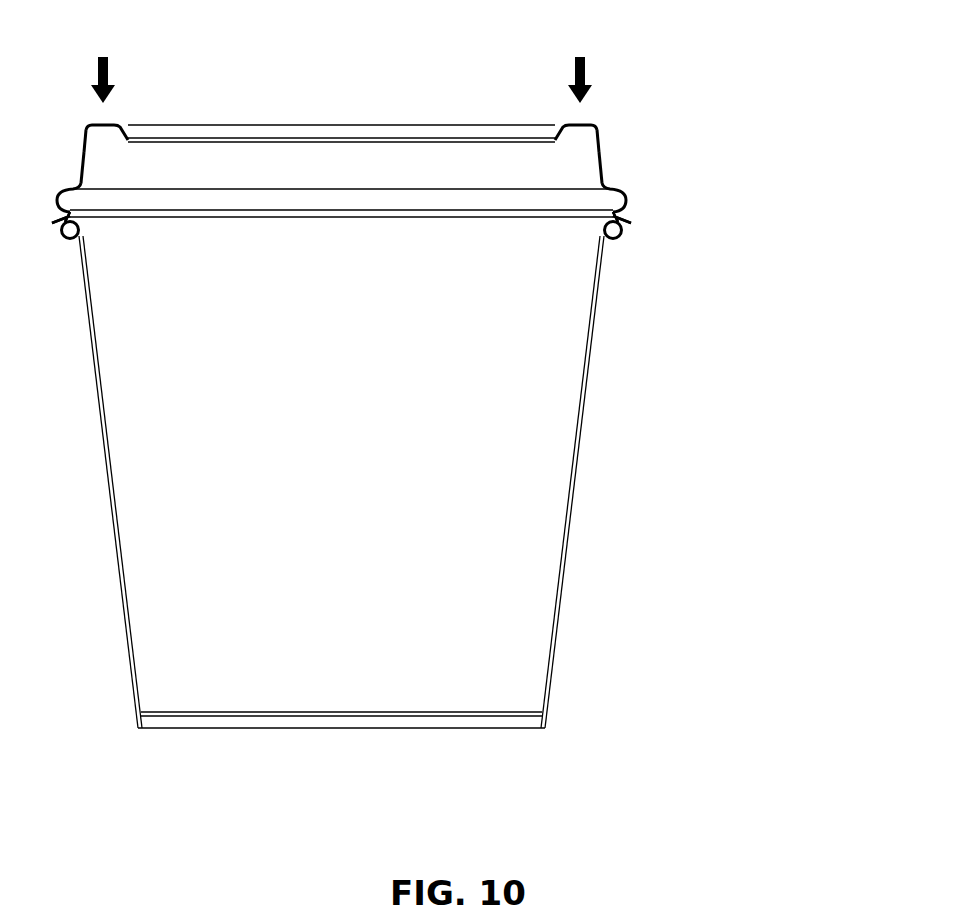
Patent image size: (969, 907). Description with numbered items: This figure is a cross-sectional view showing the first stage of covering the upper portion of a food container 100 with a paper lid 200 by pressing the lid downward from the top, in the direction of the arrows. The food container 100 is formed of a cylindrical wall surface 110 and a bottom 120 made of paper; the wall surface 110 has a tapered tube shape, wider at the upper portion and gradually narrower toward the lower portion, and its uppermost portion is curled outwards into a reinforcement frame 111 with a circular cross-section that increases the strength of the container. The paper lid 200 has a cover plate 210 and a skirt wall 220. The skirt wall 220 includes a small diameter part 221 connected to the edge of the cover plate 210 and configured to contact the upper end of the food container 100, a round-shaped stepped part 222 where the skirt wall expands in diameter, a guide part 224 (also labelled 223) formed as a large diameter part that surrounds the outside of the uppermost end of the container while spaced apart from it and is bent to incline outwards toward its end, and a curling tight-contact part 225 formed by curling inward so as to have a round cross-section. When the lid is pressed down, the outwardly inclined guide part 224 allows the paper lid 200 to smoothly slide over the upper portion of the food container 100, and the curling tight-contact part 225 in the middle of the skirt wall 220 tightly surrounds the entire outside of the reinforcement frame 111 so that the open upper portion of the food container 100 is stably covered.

The food container 100 is at (603, 520).
The wall surface 110 is at (583, 415).
The reinforcement frame 111 is at (624, 238).
The bottom 120 is at (404, 717).
The paper lid 200 is at (310, 56).
The cover plate 210 is at (107, 124).
The skirt wall 220 is at (720, 135).
The small diameter part 221 is at (600, 143).
The stepped part 222 is at (607, 180).
The locking portion 223 is at (341, 217).
The guide part 224 is at (626, 223).
The curling tight-contact part 225 is at (626, 197).